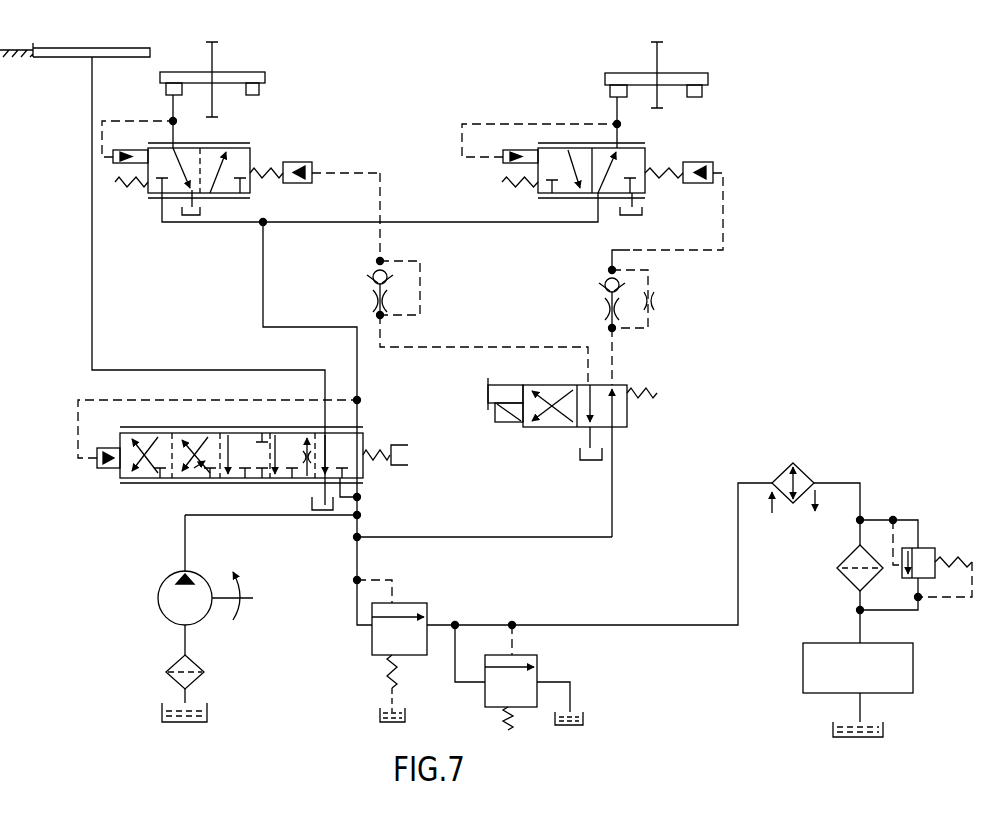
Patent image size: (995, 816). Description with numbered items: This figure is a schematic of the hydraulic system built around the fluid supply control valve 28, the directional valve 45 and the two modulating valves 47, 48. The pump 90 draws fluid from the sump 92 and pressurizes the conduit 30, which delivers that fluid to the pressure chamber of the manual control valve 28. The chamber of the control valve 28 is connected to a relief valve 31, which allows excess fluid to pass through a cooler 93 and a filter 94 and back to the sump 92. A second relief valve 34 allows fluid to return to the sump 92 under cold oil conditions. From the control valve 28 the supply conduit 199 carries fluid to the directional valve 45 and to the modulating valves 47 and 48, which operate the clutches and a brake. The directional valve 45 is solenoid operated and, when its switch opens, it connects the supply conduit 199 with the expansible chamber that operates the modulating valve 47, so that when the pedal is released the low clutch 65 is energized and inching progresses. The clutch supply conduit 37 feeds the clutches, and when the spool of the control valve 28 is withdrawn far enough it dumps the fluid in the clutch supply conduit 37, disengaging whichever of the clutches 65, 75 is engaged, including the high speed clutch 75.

The high speed clutch 75 is at (265, 77).
The modulating valve 48 is at (250, 155).
The low clutch 65 is at (708, 80).
The modulating valve 47 is at (648, 155).
The clutch supply conduit 37 is at (266, 272).
The directional valve 45 is at (622, 381).
The fluid supply control valve 28 is at (171, 490).
The conduit 30 is at (300, 516).
The conduit 199 is at (525, 537).
The pump 90 is at (175, 606).
The relief valve 31 is at (417, 603).
The sump 92 is at (405, 714).
The relief valve 34 is at (538, 665).
The cooler 93 is at (807, 477).
The filter 94 is at (852, 556).